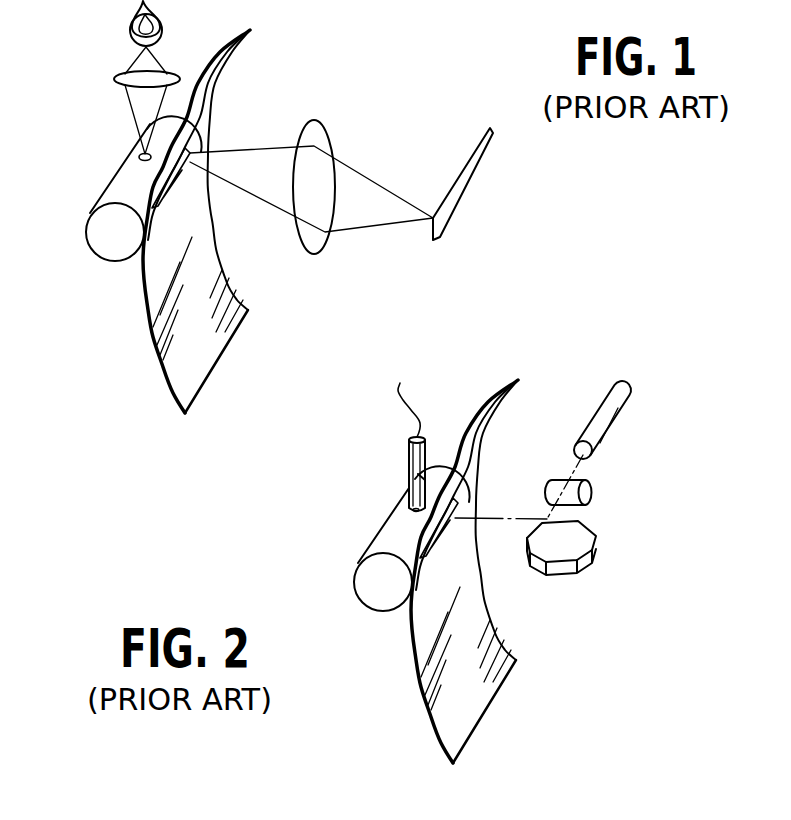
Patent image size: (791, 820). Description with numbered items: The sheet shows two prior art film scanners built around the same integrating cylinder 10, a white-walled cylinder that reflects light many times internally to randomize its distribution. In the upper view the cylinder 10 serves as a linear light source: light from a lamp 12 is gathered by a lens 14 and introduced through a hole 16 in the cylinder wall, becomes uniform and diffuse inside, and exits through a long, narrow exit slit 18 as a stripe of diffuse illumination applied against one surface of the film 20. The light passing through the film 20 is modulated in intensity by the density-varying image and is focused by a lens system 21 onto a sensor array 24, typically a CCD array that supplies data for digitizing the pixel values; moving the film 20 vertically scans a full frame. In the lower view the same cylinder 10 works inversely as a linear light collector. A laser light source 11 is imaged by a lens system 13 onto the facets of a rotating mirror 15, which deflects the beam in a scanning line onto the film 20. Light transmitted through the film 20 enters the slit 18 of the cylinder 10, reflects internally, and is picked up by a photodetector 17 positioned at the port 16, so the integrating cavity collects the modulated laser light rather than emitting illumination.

In FIG. 1, the integrating cylinder 10 is at (93, 254).
In FIG. 2, the integrating cylinder 10 is at (363, 603).
In FIG. 2, the laser light source 11 is at (615, 417).
In FIG. 1, the lamp 12 is at (132, 22).
In FIG. 2, the lens system 13 is at (592, 490).
In FIG. 1, the lens 14 is at (113, 79).
In FIG. 2, the rotating mirror 15 is at (590, 556).
In FIG. 1, the hole 16 is at (146, 159).
In FIG. 2, the hole 16 is at (412, 508).
In FIG. 2, the photodetector 17 is at (409, 468).
In FIG. 1, the exit slit 18 is at (165, 207).
In FIG. 2, the exit slit 18 is at (435, 550).
In FIG. 1, the film 20 is at (173, 373).
In FIG. 2, the film 20 is at (467, 700).
In FIG. 1, the lens system 21 is at (318, 243).
In FIG. 1, the sensor array 24 is at (433, 240).